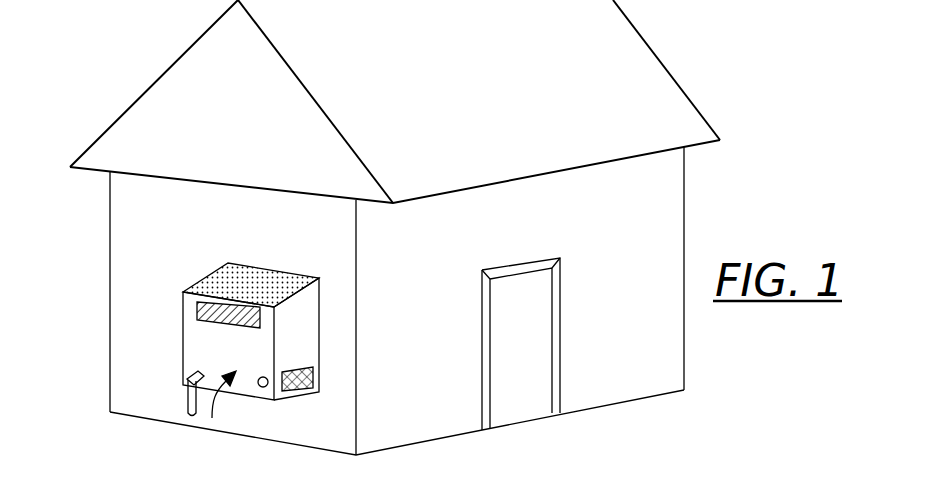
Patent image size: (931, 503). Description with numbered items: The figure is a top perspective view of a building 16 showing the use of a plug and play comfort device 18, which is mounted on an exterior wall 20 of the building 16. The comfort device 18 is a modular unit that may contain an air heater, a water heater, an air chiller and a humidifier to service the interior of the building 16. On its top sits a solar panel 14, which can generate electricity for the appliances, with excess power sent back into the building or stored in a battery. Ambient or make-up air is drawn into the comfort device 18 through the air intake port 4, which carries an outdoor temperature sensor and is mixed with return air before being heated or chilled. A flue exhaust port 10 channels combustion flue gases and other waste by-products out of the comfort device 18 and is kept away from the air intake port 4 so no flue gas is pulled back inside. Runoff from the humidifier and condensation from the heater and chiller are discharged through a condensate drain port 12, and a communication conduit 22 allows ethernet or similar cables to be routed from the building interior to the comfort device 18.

The air intake port 4 is at (305, 388).
The flue exhaust port 10 is at (197, 307).
The condensate drain port 12 is at (187, 405).
The solar panel 14 is at (212, 290).
The building serviced by comfort device 16 is at (663, 203).
The plug and play comfort device 18 is at (212, 418).
The wall where plug and play comfort device is mounted 20 is at (150, 358).
The communication conduit 22 is at (262, 386).